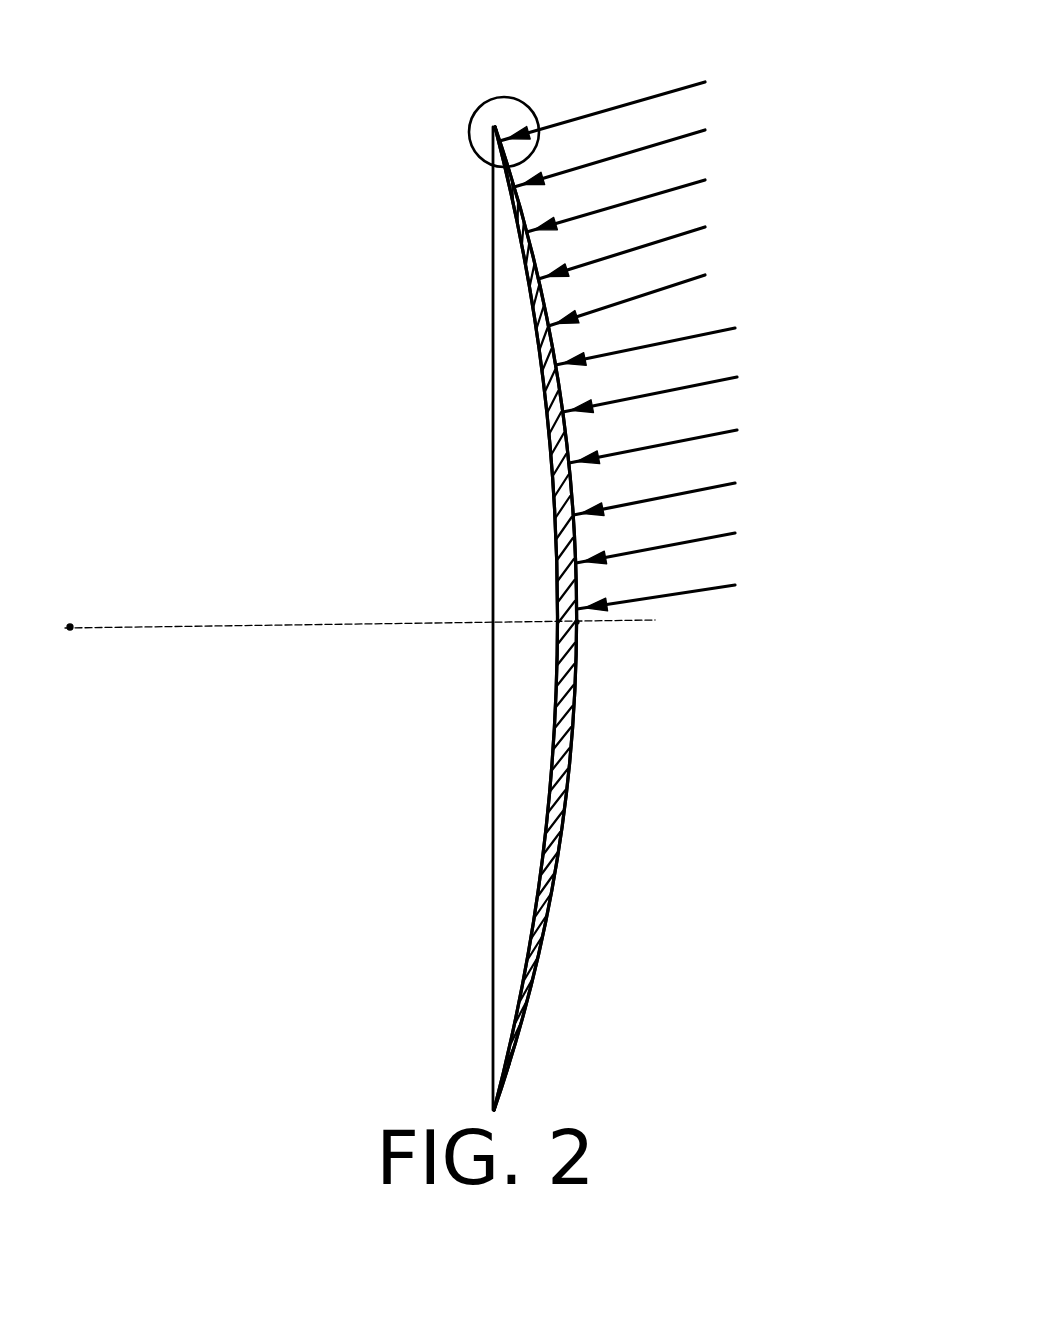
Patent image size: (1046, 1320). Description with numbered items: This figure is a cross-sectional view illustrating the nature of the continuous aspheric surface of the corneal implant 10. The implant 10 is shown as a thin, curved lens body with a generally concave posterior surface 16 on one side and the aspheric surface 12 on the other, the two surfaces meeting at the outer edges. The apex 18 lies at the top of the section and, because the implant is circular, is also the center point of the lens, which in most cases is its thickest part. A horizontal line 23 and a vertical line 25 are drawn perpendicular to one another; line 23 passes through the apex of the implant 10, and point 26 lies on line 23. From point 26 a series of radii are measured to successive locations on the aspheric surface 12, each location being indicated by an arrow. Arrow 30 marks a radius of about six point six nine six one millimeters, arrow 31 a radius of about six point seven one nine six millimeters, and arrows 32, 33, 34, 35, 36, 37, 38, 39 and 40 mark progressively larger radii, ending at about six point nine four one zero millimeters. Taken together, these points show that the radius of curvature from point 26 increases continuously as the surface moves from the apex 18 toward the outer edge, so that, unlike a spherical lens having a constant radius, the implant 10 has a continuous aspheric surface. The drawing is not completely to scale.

The implant 10 is at (608, 924).
The aspheric surface 12 is at (572, 737).
The posterior surface 16 is at (546, 835).
The apex 18 is at (578, 623).
The line 23 is at (282, 631).
The line 25 is at (492, 726).
The point 26 is at (72, 627).
The arrow 30 is at (754, 595).
The arrow 31 is at (747, 538).
The arrow 32 is at (744, 489).
The arrow 33 is at (741, 438).
The arrow 34 is at (738, 383).
The arrow 35 is at (735, 331).
The arrow 36 is at (723, 291).
The arrow 37 is at (716, 243).
The arrow 38 is at (712, 197).
The arrow 39 is at (697, 151).
The arrow 40 is at (700, 102).